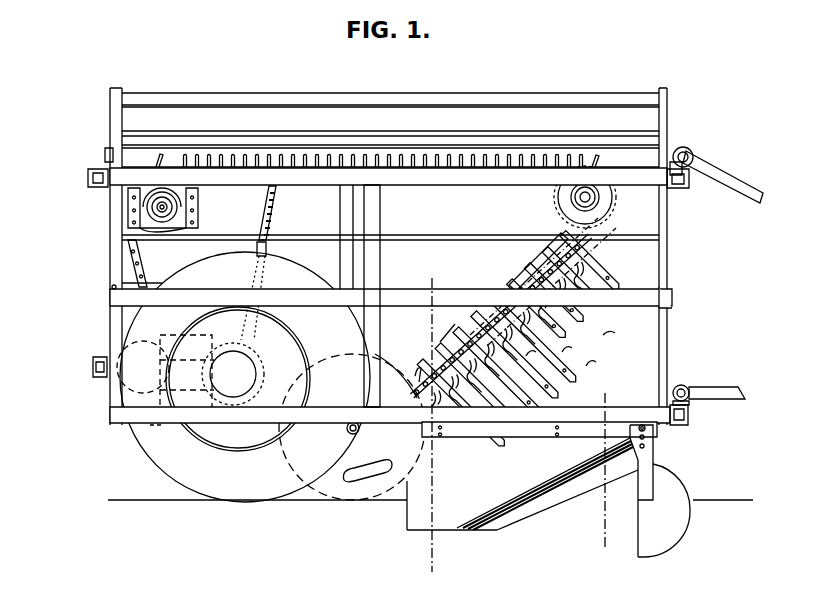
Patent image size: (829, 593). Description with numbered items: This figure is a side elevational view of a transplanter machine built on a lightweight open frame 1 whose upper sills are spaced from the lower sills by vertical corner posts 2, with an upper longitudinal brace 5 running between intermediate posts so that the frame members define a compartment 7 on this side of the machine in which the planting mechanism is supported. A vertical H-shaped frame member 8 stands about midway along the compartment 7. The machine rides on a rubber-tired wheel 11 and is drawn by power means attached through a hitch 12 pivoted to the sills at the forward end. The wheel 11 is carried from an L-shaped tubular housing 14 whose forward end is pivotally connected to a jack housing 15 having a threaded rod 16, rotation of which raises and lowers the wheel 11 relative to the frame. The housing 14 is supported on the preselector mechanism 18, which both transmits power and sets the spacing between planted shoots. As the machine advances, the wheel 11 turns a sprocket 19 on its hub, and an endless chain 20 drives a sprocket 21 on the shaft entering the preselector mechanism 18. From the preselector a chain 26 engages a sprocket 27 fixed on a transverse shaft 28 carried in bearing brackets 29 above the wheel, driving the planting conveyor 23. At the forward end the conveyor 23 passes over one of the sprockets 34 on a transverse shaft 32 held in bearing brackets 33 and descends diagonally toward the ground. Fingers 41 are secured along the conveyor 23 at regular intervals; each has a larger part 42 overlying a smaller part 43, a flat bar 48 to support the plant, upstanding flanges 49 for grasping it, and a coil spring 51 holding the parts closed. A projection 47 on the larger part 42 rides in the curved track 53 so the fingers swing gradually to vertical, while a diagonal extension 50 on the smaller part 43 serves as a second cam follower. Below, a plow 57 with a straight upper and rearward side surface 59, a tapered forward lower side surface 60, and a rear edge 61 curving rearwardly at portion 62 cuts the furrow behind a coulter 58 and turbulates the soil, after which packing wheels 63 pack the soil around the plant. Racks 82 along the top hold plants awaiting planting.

The open frame 1 is at (88, 180).
The vertical corner posts 2 is at (110, 276).
The longitudinal brace 5 is at (440, 566).
The compartment 7 is at (613, 530).
The H-shaped frame member 8 is at (347, 265).
The rubber-tired wheel 11 is at (151, 461).
The hitch 12 is at (752, 203).
The L-shaped tubular housing 14 is at (151, 362).
The jack housing 15 is at (260, 291).
The threaded rod 16 is at (273, 212).
The preselector mechanism 18 is at (170, 276).
The sprocket 19 is at (272, 367).
The endless chain 20 is at (156, 422).
The sprocket 21 is at (117, 393).
The planting conveyor 23 is at (607, 218).
The chain 26 is at (145, 256).
The sprocket 27 is at (187, 226).
The transverse shaft 28 is at (162, 212).
The bearing brackets 29 is at (196, 211).
The transverse shaft 32 is at (590, 192).
The bearing brackets 33 is at (568, 196).
The sprockets 34 is at (560, 208).
The fingers 41 is at (556, 397).
The larger finger part 42 is at (592, 353).
The smaller finger part 43 is at (603, 335).
The projection 47 is at (420, 372).
The flat bar 48 is at (566, 345).
The upstanding flange 49 is at (450, 158).
The diagonal extension 50 is at (448, 340).
The coil spring 51 is at (513, 356).
The curved track 53 is at (510, 287).
The plow 57 is at (538, 508).
The coulter 58 is at (673, 523).
The upper and rearward side surface 59 is at (412, 515).
The forward lower side surface 60 is at (573, 497).
The rear edge 61 is at (405, 507).
The rearwardly curved portion 62 is at (359, 458).
The packing wheels 63 is at (422, 386).
The racks 82 is at (591, 98).